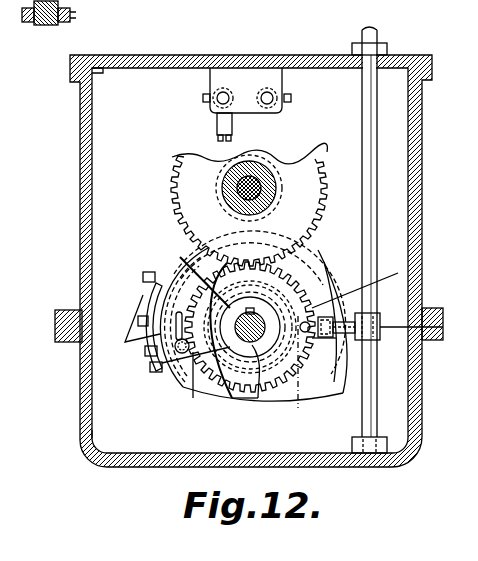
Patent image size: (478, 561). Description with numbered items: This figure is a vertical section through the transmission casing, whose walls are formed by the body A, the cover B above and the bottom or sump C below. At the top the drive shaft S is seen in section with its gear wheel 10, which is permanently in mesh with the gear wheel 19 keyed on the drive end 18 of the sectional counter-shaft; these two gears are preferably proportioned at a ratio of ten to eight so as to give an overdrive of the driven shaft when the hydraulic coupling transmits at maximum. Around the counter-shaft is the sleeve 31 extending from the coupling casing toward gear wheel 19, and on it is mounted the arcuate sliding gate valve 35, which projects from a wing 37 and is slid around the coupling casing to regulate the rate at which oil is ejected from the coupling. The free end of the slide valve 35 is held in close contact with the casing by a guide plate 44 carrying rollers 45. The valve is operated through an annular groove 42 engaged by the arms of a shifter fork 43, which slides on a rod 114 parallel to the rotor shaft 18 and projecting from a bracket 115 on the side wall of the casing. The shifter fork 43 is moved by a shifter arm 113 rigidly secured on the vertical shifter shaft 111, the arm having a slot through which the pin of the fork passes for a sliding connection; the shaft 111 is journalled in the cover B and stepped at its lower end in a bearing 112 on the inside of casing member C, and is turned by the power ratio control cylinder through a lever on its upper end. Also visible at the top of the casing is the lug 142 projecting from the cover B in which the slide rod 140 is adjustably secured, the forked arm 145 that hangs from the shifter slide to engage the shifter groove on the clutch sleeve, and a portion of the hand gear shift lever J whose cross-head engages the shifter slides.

The gear wheel 10 is at (302, 160).
The drive end of counter-shaft 18 is at (250, 398).
The gear wheel 19 is at (270, 395).
The sleeve 31 is at (222, 307).
The sliding gate valve 35 is at (175, 265).
The wing 37 is at (188, 385).
The annular groove 42 is at (228, 392).
The shifter fork 43 is at (310, 370).
The guide plate 44 is at (158, 372).
The rollers 45 is at (143, 333).
The shifter shaft 111 is at (375, 192).
The bearing 112 is at (400, 448).
The shifter arm 113 is at (368, 312).
The rod 114 is at (343, 390).
The bracket 115 is at (316, 272).
The rod 140 is at (277, 97).
The lug 142 is at (242, 72).
The forked arm 145 is at (215, 97).
The body A is at (82, 196).
The cover B is at (195, 58).
The bottom or sump C is at (82, 397).
The drive shaft S is at (252, 186).
The hand gear shift lever J is at (66, 12).